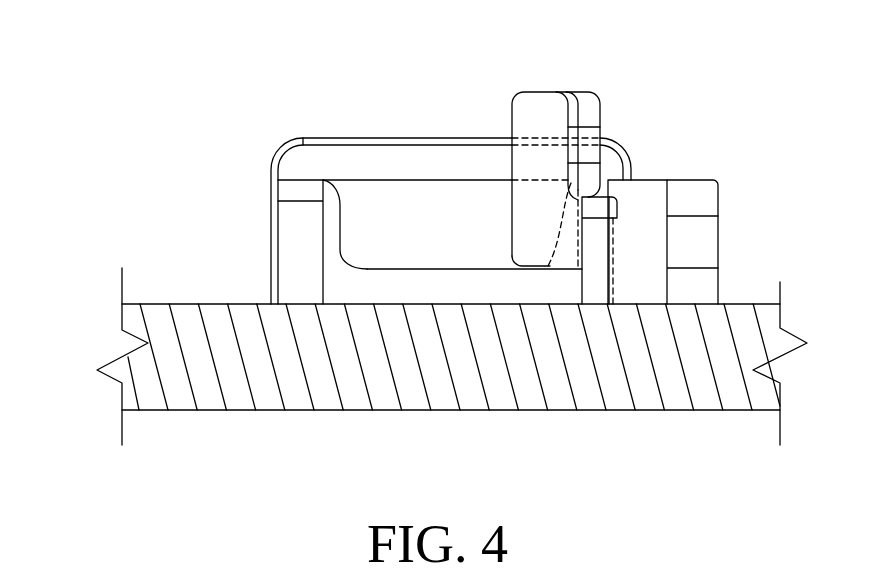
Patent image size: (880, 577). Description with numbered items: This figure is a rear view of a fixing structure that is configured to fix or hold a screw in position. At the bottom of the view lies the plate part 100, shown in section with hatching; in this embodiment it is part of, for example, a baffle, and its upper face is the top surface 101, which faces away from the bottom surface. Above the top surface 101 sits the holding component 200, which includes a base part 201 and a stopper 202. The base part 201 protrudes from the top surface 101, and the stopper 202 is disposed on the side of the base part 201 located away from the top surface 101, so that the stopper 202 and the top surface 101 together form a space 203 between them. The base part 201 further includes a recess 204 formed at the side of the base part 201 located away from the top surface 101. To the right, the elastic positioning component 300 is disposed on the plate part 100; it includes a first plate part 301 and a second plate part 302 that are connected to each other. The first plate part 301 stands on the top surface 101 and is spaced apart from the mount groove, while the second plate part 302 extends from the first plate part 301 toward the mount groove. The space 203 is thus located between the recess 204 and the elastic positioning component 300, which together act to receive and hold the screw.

The plate part 100 is at (165, 323).
The top surface 101 is at (158, 292).
The holding component 200 is at (193, 153).
The base part 201 is at (299, 222).
The stopper 202 is at (352, 157).
The space 203 is at (360, 282).
The recess 204 is at (441, 215).
The elastic positioning component 300 is at (775, 32).
The first plate part 301 is at (598, 250).
The second plate part 302 is at (585, 115).